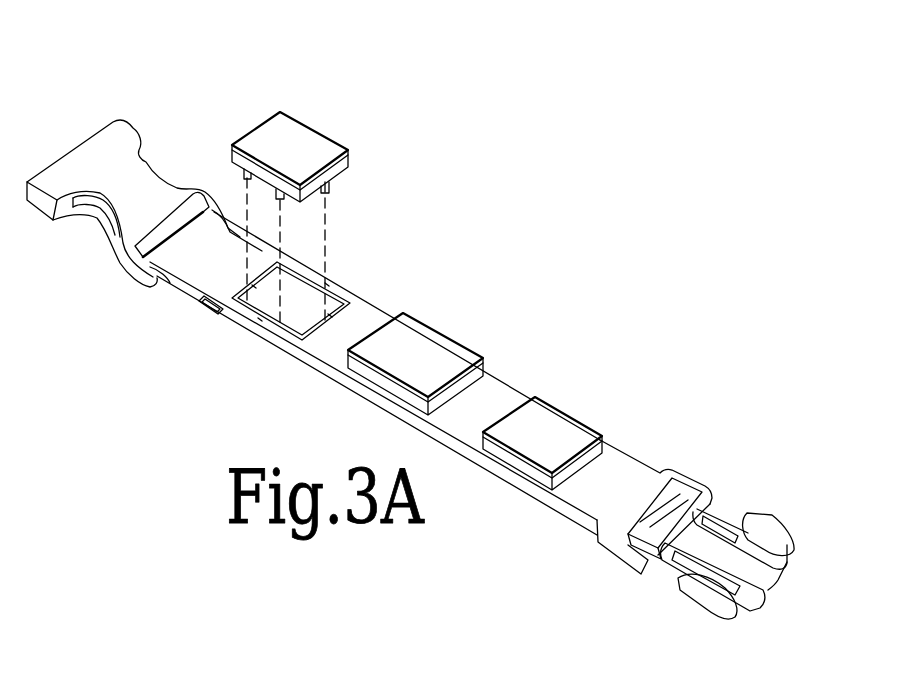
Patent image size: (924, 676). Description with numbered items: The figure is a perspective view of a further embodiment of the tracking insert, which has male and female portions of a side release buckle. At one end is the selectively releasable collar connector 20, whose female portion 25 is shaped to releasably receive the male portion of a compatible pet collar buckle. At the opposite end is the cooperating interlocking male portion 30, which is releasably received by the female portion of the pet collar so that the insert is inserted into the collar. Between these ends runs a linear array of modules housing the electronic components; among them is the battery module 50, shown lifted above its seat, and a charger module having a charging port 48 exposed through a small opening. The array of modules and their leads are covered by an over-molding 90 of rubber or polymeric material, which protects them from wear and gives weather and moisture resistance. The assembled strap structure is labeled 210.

The collar connector 20 is at (125, 121).
The female portion 25 is at (138, 176).
The male portion 30 is at (767, 538).
The charging port 48 is at (211, 310).
The battery module 50 is at (300, 157).
The over-molding 90 is at (614, 472).
The strap assembly 210 is at (520, 356).